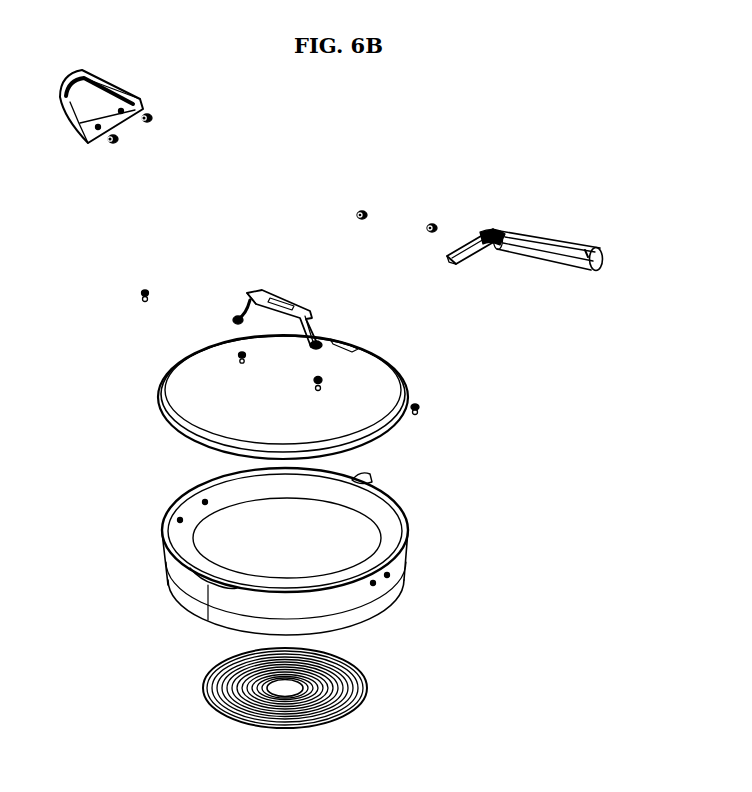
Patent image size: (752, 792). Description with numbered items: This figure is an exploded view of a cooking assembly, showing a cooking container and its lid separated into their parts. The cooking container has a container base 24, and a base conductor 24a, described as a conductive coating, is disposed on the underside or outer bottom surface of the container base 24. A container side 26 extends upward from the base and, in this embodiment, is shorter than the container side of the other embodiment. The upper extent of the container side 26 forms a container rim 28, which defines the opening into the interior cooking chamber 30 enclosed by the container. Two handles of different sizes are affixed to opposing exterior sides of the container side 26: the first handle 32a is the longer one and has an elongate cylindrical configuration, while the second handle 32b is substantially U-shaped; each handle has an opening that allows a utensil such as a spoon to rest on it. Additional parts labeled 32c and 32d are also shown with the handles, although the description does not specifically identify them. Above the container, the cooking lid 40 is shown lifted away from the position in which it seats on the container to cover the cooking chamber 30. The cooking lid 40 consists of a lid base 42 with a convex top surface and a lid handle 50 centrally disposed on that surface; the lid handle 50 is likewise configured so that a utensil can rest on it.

The cooking lid 40 is at (282, 371).
The lid base 42 is at (370, 390).
The lid handle 50 is at (318, 318).
The interior cooking chamber 30 is at (289, 539).
The container base 24 is at (340, 548).
The base conductor 24a is at (368, 688).
The container side 26 is at (493, 532).
The container rim 28 is at (158, 536).
The first handle 32a is at (690, 260).
The second handle 32b is at (73, 128).
The handle bracket 32c is at (543, 166).
The handle fasteners 32d is at (95, 103).